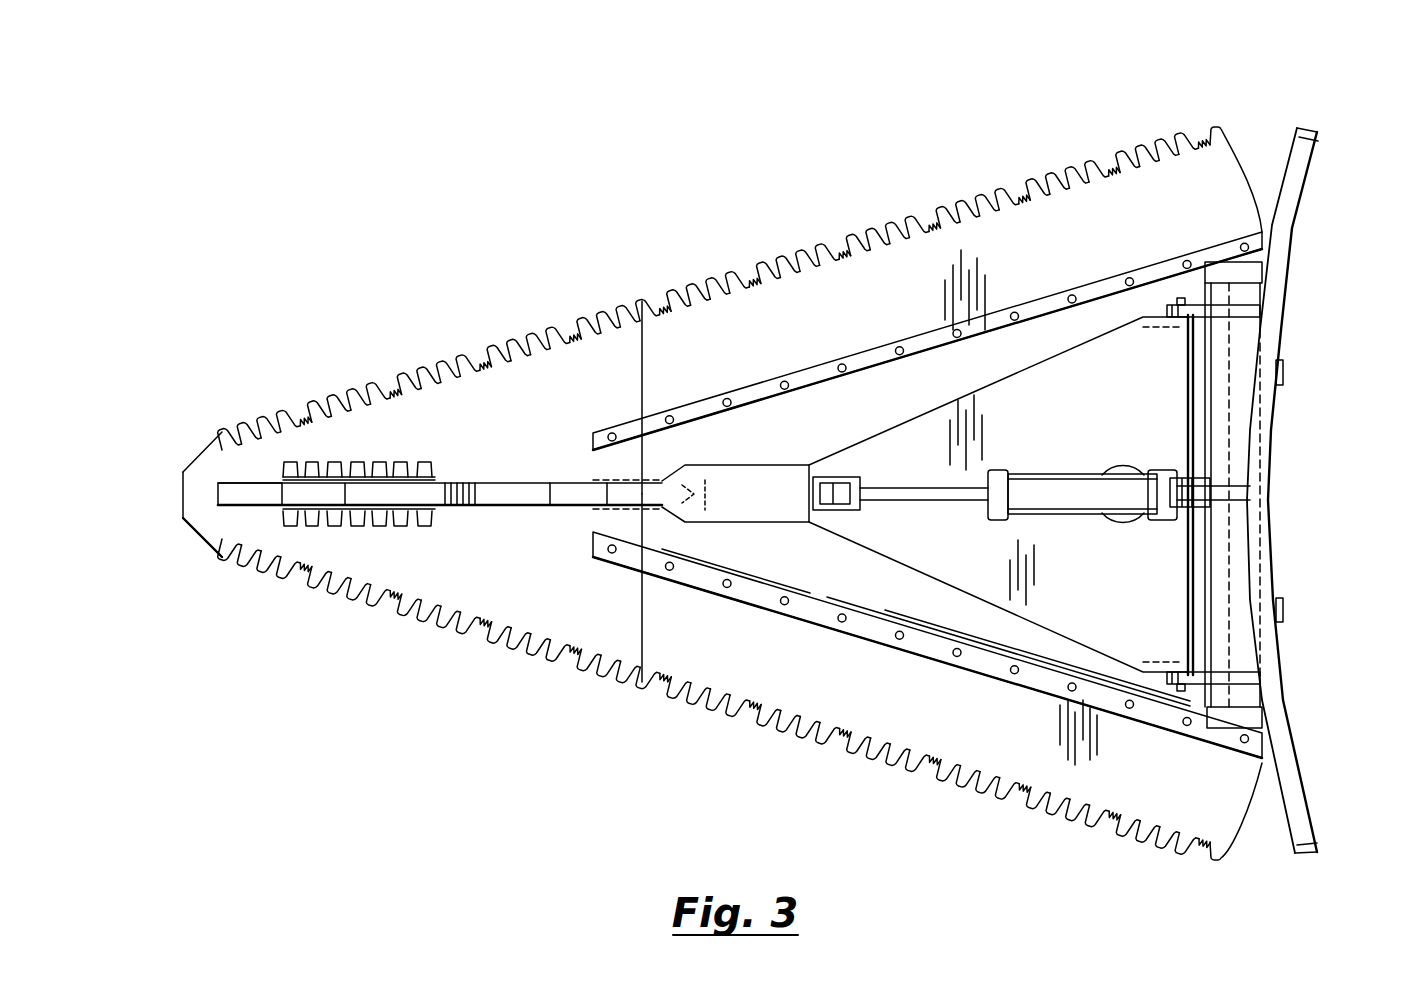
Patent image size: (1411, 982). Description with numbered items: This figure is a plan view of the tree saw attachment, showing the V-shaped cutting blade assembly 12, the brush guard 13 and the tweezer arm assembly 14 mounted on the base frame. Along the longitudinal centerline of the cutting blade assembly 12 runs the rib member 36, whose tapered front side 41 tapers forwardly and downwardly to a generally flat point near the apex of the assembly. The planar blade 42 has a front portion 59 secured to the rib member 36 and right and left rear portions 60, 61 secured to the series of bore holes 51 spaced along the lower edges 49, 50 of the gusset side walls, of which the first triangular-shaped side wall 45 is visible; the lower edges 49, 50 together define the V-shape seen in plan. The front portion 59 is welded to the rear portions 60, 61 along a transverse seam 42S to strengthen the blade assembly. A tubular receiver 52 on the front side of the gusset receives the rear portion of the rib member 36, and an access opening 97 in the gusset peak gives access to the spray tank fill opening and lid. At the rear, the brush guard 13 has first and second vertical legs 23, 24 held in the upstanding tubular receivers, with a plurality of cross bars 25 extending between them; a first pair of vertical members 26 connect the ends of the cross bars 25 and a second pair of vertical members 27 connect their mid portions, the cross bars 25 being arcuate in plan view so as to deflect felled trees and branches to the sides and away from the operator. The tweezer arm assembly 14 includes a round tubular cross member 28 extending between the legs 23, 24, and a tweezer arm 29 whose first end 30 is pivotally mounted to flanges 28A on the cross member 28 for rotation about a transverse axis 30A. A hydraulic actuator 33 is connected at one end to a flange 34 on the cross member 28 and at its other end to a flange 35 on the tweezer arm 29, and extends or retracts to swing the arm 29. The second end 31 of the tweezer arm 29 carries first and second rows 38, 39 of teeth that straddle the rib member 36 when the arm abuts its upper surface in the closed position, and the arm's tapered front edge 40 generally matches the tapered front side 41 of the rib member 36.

The V-shaped cutting blade assembly 12 is at (535, 365).
The brush guard 13 is at (1288, 240).
The tweezer arm assembly 14 is at (732, 482).
The first vertical leg 23 is at (1240, 720).
The second vertical leg 24 is at (1238, 270).
The cross bars 25 is at (1302, 183).
The first pair of vertical members 26 is at (1312, 128).
The second pair of vertical members 27 is at (1288, 378).
The cross member 28 is at (1225, 523).
The flanges 28A is at (1217, 310).
The tweezer arm 29 is at (483, 497).
The first end 30 is at (1122, 340).
The transverse axis 30A is at (1182, 300).
The second end 31 is at (390, 497).
The hydraulic actuator 33 is at (1047, 490).
The flange 34 is at (1213, 497).
The flange 35 is at (818, 492).
The rib member 36 is at (233, 498).
The first row of teeth 38 is at (290, 522).
The second row of teeth 39 is at (302, 468).
The tapered front edge 40 is at (312, 497).
The tapered front side 41 is at (237, 497).
The planar blade 42 is at (437, 560).
The transverse seam 42S is at (642, 618).
The first triangular-shaped side wall 45 is at (815, 577).
The lower edge 49 is at (713, 583).
The lower edge 50 is at (808, 375).
The bore holes 51 is at (900, 644).
The tubular receiver 52 is at (592, 500).
The front portion 59 is at (490, 582).
The right rear portion 60 is at (960, 745).
The left rear portion 61 is at (878, 278).
The access opening 97 is at (1125, 470).